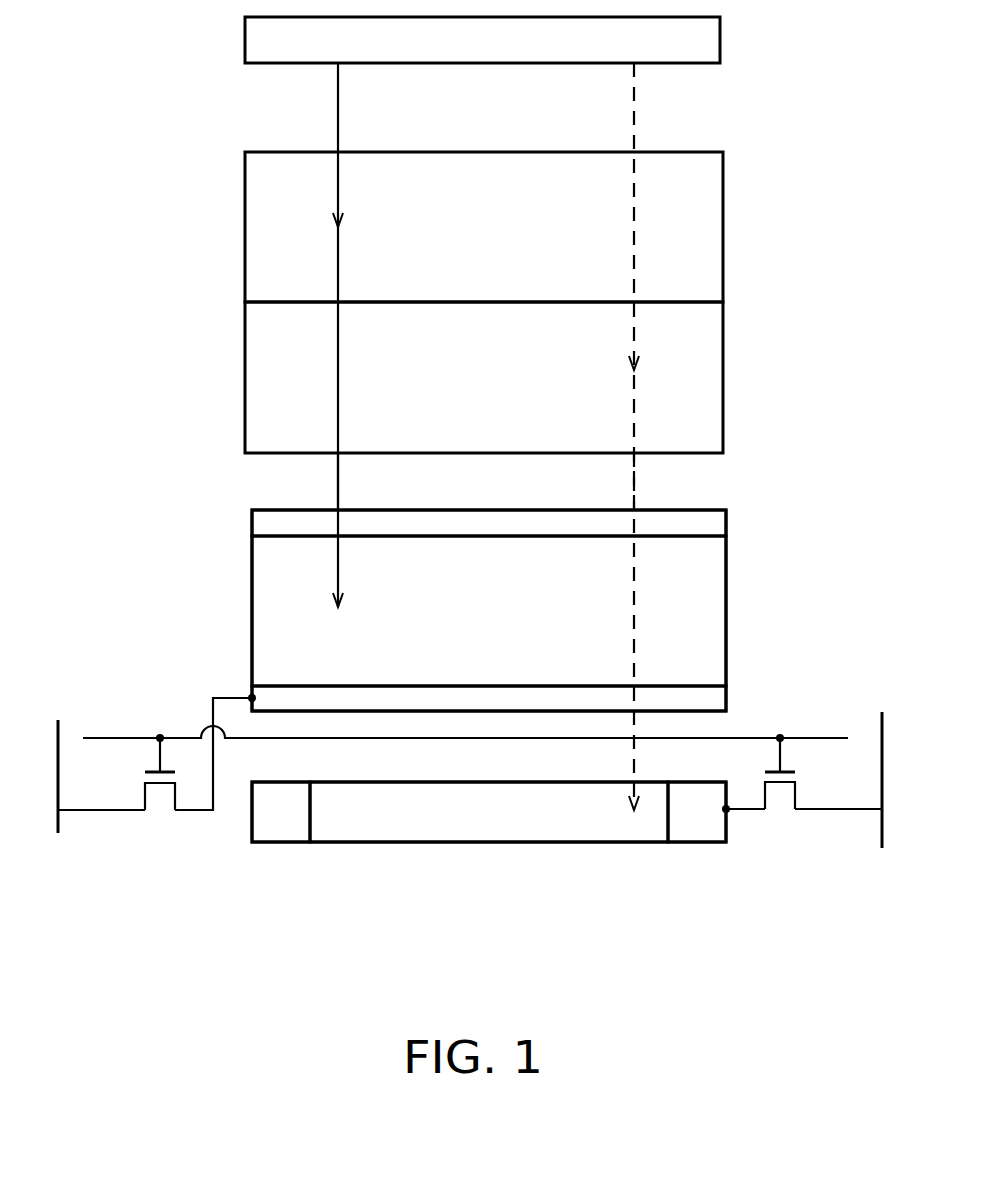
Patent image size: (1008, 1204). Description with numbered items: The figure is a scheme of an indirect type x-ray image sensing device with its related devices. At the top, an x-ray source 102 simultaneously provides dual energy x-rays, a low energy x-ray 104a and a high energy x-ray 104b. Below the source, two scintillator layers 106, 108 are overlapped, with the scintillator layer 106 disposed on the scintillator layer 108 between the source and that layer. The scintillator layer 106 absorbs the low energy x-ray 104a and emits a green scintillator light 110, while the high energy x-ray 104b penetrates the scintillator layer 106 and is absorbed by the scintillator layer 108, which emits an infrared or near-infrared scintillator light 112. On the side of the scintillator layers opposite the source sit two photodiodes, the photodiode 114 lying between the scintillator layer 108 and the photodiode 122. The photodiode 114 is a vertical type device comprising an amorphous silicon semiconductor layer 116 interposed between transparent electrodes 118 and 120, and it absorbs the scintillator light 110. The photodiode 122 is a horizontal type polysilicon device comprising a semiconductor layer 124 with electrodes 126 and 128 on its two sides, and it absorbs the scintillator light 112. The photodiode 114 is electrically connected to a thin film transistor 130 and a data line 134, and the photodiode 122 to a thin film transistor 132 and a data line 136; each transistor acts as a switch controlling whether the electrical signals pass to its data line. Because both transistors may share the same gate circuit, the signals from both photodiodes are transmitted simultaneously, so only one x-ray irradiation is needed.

The x-ray source 102 is at (713, 37).
The low energy x-ray 104a is at (338, 110).
The high energy x-ray 104b is at (634, 108).
The scintillator layer 106 is at (718, 222).
The scintillator layer 108 is at (718, 375).
The scintillator light 110 is at (338, 483).
The scintillator light 112 is at (634, 473).
The photodiode 114 is at (168, 505).
The semiconductor layer 116 is at (252, 612).
The electrode 118 is at (252, 523).
The electrode 120 is at (282, 698).
The photodiode 122 is at (733, 913).
The semiconductor layer 124 is at (490, 832).
The electrode 126 is at (282, 833).
The electrode 128 is at (699, 830).
The thin film transistor 130 is at (160, 800).
The thin film transistor 132 is at (781, 800).
The data line 134 is at (60, 740).
The data line 136 is at (880, 727).